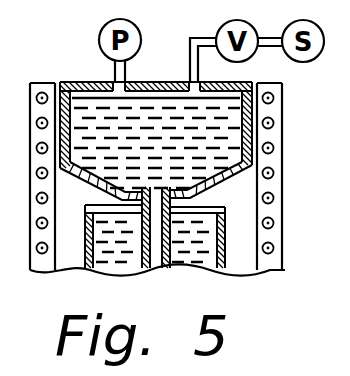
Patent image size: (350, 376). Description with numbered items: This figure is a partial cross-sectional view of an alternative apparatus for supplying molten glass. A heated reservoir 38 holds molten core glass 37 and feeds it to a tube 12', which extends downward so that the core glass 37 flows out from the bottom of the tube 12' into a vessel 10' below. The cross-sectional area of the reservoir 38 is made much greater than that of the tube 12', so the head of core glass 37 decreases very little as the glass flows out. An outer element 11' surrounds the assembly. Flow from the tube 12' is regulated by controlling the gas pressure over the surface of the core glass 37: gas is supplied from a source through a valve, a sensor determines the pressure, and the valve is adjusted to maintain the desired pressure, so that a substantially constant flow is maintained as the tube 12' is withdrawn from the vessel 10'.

The heated reservoir 38 is at (80, 82).
The molten core glass 37 is at (168, 145).
The furnace tube 11' is at (190, 176).
The vessel 10' is at (217, 236).
The tube 12' is at (186, 248).